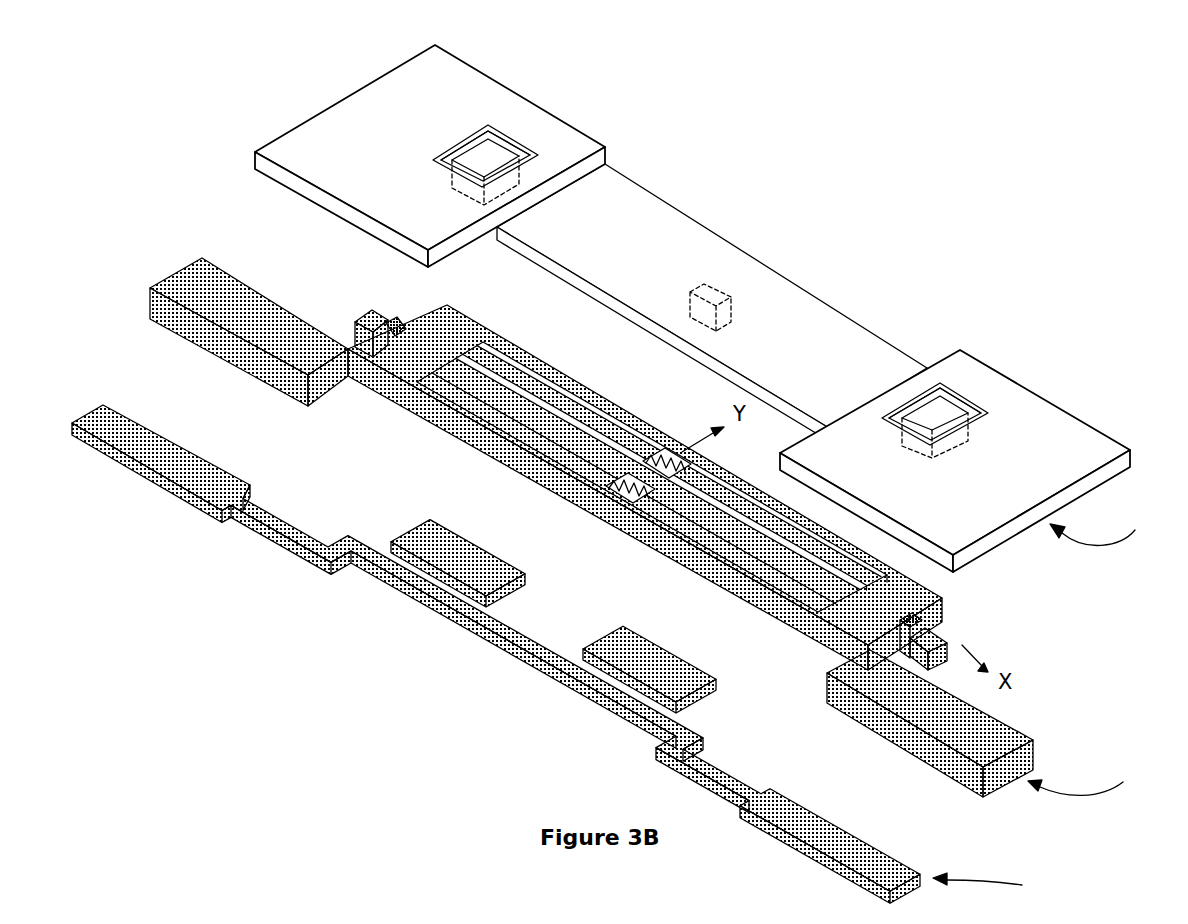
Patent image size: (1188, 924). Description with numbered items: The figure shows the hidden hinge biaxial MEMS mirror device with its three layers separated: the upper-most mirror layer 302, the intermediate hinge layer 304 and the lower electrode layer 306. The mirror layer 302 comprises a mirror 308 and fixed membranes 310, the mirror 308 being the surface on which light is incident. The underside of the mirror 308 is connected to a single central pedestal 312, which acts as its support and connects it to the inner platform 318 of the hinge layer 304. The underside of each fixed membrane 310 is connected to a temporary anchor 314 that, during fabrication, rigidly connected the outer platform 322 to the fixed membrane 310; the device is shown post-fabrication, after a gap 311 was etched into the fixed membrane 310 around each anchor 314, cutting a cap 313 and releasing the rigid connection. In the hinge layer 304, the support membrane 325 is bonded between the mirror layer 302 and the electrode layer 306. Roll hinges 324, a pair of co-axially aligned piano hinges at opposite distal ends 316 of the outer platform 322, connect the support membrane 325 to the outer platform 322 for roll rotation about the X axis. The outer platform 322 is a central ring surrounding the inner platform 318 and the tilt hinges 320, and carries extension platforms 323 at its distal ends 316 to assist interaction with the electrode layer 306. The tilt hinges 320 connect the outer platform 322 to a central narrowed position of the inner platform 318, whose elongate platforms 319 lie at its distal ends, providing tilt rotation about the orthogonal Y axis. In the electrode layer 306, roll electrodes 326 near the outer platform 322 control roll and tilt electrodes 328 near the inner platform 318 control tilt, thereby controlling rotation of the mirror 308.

The mirror layer 302 is at (1113, 523).
The hinge layer 304 is at (1098, 776).
The electrode layer 306 is at (1004, 879).
The mirror 308 is at (810, 322).
The fixed membrane 310 is at (330, 160).
The gap 311 is at (488, 128).
The pedestal 312 is at (713, 290).
The cap 313 is at (447, 153).
The temporary anchor 314 is at (520, 152).
The distal end 316 is at (445, 322).
The inner platform 318 is at (625, 455).
The elongate platform 319 is at (498, 386).
The tilt hinge 320 is at (680, 455).
The outer platform 322 is at (470, 440).
The extension platform 323 is at (202, 278).
The roll hinge 324 is at (392, 318).
The support membrane 325 is at (367, 312).
The roll electrode 326 is at (205, 472).
The tilt electrode 328 is at (512, 548).